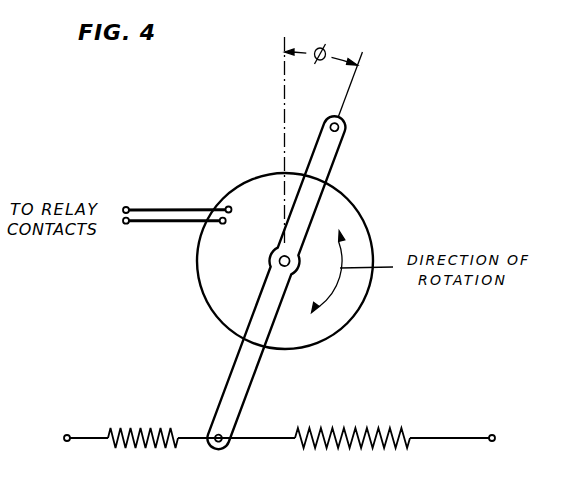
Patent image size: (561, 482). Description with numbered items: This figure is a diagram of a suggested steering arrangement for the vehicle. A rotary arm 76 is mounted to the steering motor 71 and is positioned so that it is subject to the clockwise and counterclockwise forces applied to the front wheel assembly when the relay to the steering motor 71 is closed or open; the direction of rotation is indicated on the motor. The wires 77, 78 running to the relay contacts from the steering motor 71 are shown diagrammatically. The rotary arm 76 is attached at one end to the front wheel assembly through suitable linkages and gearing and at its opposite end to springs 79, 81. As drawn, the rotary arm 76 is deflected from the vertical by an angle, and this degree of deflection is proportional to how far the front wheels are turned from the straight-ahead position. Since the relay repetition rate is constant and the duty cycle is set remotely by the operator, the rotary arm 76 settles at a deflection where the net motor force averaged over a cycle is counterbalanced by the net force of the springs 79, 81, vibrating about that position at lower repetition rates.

The steering motor 71 is at (222, 307).
The rotary arm 76 is at (243, 387).
The wire to relay contacts 77 is at (157, 207).
The wire to relay contacts 78 is at (159, 224).
The spring 79 is at (137, 428).
The spring 81 is at (357, 430).